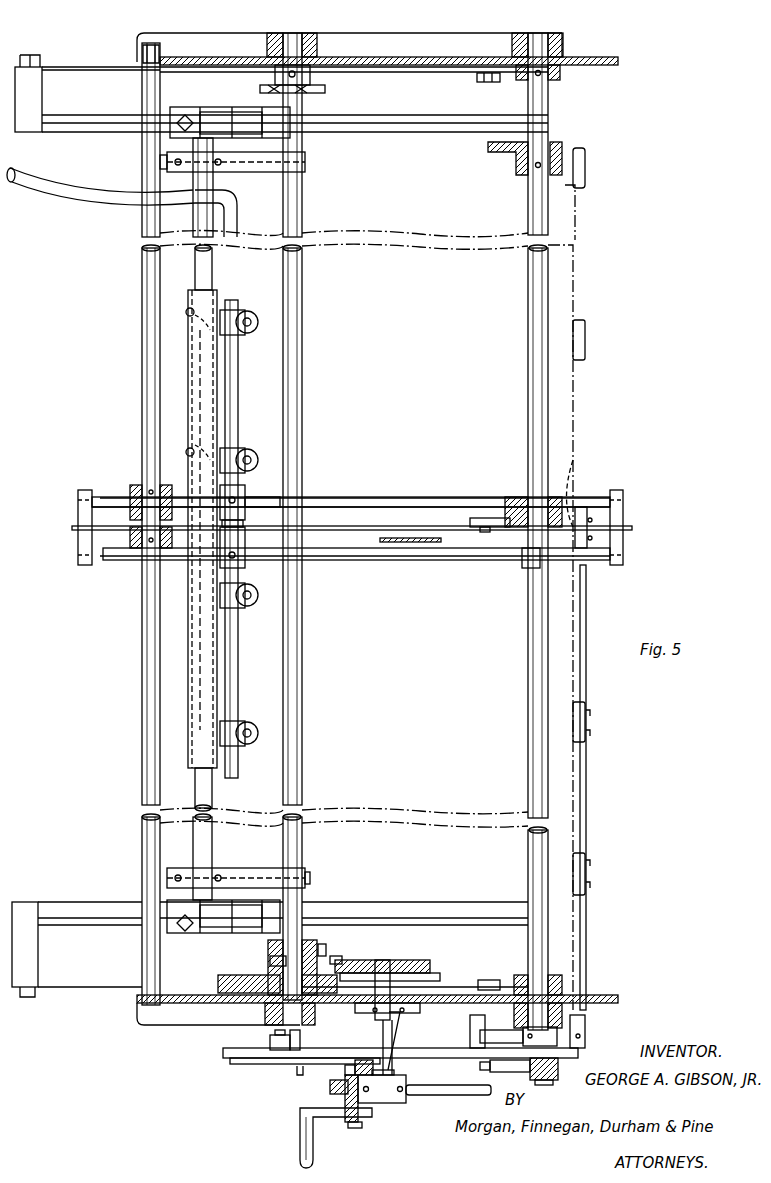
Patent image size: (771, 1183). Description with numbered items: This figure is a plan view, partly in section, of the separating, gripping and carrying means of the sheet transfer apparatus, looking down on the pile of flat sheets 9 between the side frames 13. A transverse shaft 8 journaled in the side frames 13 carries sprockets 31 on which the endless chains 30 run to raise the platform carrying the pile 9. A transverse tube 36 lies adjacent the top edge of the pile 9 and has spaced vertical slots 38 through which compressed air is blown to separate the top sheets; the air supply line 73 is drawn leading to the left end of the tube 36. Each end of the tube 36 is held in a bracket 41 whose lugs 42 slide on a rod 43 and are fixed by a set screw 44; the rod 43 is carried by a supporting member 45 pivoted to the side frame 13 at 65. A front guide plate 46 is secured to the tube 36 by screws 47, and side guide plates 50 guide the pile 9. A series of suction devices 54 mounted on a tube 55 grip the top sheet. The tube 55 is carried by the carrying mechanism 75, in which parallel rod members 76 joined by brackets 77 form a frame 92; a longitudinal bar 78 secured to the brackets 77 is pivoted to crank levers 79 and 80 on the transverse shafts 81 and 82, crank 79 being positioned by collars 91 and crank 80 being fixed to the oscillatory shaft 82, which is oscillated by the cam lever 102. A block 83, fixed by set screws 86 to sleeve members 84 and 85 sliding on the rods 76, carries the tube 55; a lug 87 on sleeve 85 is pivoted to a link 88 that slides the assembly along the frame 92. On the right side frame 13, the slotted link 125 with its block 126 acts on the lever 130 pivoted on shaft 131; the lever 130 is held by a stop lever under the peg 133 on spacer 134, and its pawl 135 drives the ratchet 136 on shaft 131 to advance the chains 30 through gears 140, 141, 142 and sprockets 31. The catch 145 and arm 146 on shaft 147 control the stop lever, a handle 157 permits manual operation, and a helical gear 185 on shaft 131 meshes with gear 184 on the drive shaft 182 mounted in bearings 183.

The transverse shaft 8 is at (302, 366).
The pile of flat sheets 9 is at (585, 290).
The side frame 13 is at (390, 57).
The endless chain 30 is at (325, 87).
The sprocket 31 is at (325, 93).
The transverse tube 36 is at (195, 268).
The vertical slot 38 is at (192, 338).
The bracket 41 is at (236, 112).
The lug 42 is at (198, 107).
The rod 43 is at (82, 123).
The set screw 44 is at (183, 115).
The supporting member 45 is at (92, 70).
The front guide plate 46 is at (188, 403).
The screw 47 is at (188, 310).
The side guide plate 50 is at (260, 172).
The suction device 54 is at (256, 306).
The tube 55 is at (238, 408).
The pivot 65 is at (490, 82).
The hose 73 is at (83, 203).
The carrying mechanism 75 is at (70, 553).
The rod member 76 is at (425, 507).
The bracket 77 is at (618, 540).
The longitudinal bar 78 is at (72, 528).
The crank lever 79 is at (118, 497).
The crank lever 80 is at (505, 515).
The stationary shaft 81 is at (142, 376).
The oscillatory shaft 82 is at (528, 382).
The block 83 is at (245, 542).
The sleeve member 84 is at (265, 485).
The sleeve member 85 is at (320, 561).
The set screw 86 is at (240, 495).
The lug 87 is at (522, 565).
The link 88 is at (418, 545).
The collar 91 is at (128, 488).
The frame 92 is at (395, 490).
The lever 102 is at (508, 152).
The slotted link 125 is at (480, 1065).
The block 126 is at (528, 1078).
The lever 130 is at (228, 1060).
The shaft 131 is at (352, 1128).
The peg 133 is at (270, 1036).
The spacer 134 is at (268, 1046).
The pawl 135 is at (255, 1066).
The ratchet 136 is at (345, 1066).
The gear 140 is at (398, 960).
The gear 141 is at (440, 973).
The gear 142 is at (243, 975).
The catch 145 is at (575, 480).
The arm 146 is at (582, 675).
The shaft 147 is at (494, 1030).
The handle 157 is at (300, 1140).
The drive shaft 182 is at (435, 1095).
The bearing 183 is at (382, 1103).
The helical gear 184 is at (358, 1115).
The helical gear 185 is at (328, 1087).